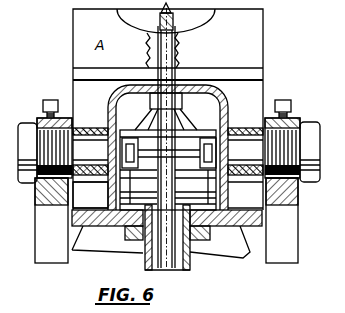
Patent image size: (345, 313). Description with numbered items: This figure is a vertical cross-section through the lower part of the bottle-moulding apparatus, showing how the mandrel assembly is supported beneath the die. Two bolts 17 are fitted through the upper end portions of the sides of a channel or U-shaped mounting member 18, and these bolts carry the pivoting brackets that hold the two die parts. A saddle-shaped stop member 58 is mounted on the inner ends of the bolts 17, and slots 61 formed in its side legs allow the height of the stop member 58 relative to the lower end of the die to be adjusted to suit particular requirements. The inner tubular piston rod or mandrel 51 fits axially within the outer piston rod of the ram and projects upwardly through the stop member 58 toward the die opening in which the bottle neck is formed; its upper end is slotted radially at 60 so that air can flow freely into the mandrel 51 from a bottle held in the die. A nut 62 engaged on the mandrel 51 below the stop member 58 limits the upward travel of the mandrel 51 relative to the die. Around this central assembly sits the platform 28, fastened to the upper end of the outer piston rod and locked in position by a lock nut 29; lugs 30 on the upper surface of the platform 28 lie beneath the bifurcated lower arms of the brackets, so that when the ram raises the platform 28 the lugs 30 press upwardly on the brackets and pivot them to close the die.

The bolts 17 is at (316, 198).
The mounting member 18 is at (290, 222).
The platform 28 is at (98, 228).
The lock nut 29 is at (205, 238).
The lugs 30 is at (90, 195).
The mandrel 51 is at (192, 262).
The stop member 58 is at (212, 85).
The radial slots 60 is at (176, 28).
The slots 61 is at (222, 176).
The nut 62 is at (183, 100).